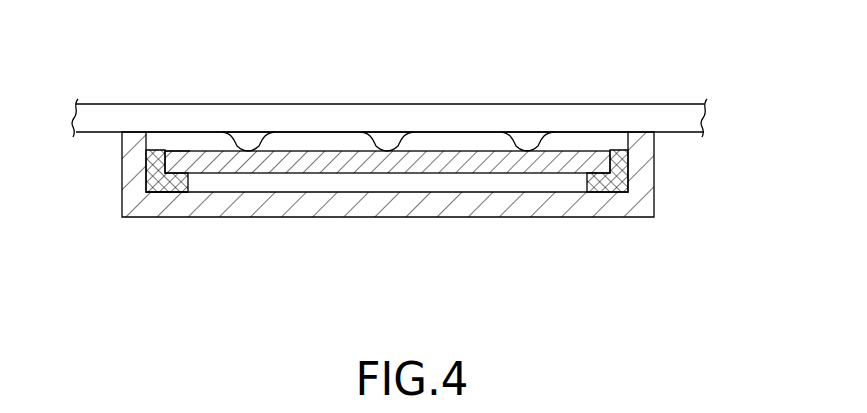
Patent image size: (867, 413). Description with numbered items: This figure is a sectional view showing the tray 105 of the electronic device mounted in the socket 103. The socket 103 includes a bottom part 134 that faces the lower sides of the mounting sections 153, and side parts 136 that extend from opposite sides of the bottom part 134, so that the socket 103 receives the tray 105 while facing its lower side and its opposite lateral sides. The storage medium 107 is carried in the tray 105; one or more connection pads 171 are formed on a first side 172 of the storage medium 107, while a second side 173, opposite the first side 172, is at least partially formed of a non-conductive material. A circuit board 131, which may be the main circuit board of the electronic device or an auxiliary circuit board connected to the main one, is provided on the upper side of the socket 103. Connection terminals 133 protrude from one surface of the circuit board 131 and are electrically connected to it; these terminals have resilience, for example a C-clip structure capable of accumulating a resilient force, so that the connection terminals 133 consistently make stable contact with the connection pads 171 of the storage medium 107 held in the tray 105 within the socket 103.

The socket 103 is at (668, 203).
The tray 105 is at (620, 162).
The storage medium 107 is at (293, 176).
The circuit board 131 is at (607, 117).
The connection terminals 133 is at (248, 135).
The bottom part 134 is at (422, 205).
The side parts 136 is at (133, 163).
The mounting sections 153 is at (158, 184).
The connection pads 171 is at (322, 150).
The first side 172 is at (187, 151).
The second side 173 is at (194, 163).